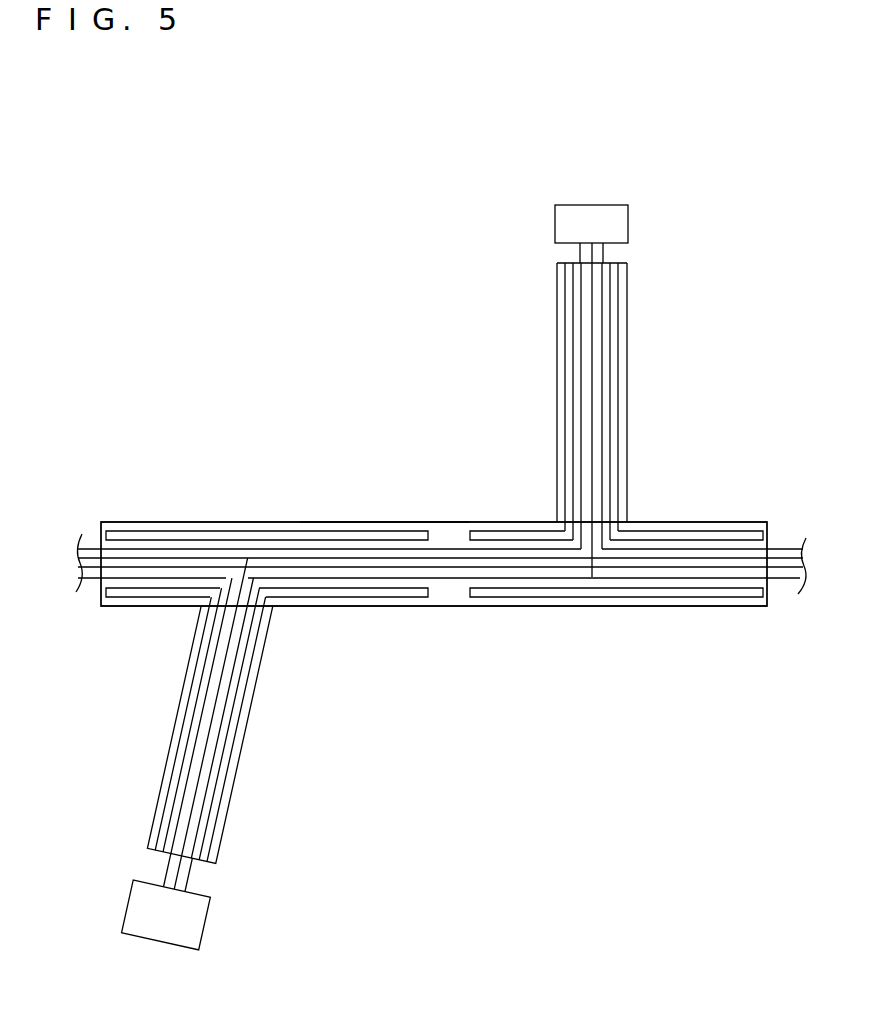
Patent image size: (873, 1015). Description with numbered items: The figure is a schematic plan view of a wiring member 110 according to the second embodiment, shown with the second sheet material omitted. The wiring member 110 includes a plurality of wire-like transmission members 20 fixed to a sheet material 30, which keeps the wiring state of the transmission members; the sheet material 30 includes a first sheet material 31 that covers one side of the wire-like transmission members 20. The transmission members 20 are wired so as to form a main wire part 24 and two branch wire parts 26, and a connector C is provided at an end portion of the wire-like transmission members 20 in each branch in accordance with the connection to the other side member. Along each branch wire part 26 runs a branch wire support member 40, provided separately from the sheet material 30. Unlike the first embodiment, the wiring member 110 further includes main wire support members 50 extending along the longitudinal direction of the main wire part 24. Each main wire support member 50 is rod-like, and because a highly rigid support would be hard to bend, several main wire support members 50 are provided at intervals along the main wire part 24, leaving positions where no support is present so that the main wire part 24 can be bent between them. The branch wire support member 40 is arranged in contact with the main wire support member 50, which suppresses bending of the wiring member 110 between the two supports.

The wiring member 110 is at (185, 134).
The wire-like transmission member 20 is at (775, 548).
The main wire part 24 is at (280, 548).
The branch wire part 26 is at (606, 431).
The sheet material 30 is at (448, 522).
The first sheet material 31 is at (377, 522).
The branch wire support member 40 is at (567, 393).
The main wire support member 50 is at (183, 522).
The connector C is at (602, 212).